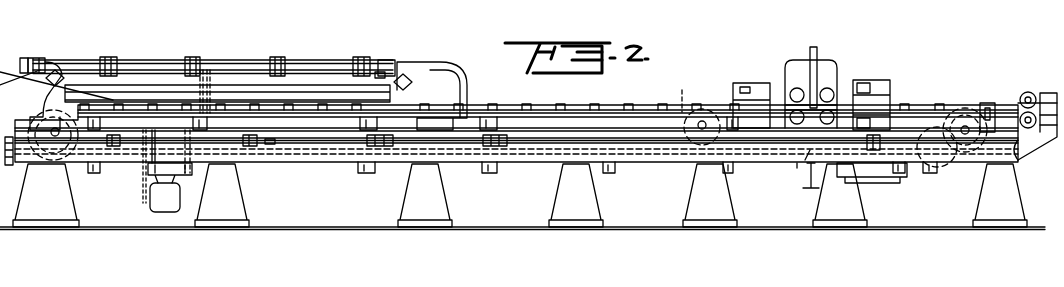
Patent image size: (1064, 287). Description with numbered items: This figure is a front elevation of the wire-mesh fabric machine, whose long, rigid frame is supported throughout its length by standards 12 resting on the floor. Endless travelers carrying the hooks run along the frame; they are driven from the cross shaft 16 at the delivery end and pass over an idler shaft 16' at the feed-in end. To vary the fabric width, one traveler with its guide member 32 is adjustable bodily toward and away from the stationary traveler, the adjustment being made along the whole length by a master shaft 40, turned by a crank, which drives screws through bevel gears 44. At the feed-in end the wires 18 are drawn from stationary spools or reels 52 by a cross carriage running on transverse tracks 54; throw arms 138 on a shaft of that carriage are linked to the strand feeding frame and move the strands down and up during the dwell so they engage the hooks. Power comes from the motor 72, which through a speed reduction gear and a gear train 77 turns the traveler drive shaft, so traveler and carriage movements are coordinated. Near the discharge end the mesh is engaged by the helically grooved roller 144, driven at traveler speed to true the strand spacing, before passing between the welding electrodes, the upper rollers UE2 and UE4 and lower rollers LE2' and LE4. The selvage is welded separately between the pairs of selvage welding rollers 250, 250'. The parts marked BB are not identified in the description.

The standards 12 is at (222, 209).
The cross shaft 16 is at (969, 118).
The idler shaft 16' is at (60, 151).
The wires 18 is at (56, 78).
The guide member 32 is at (515, 108).
The master shaft 40 is at (333, 143).
The bevel gears 44 is at (270, 160).
The spools or reels 52 is at (25, 58).
The tracks 54 is at (63, 63).
The motor 72 is at (160, 203).
The gear train 77 is at (928, 170).
The throw arms 138 is at (110, 53).
The roller 144 is at (687, 112).
The selvage welding roller 250 is at (1014, 96).
The selvage welding roller 250' is at (1029, 161).
The bearing block BB is at (755, 77).
The upper roller electrode UE2 is at (788, 85).
The upper roller electrode UE4 is at (855, 80).
The lower roller electrode LE2' is at (786, 165).
The lower roller electrode LE4 is at (780, 178).